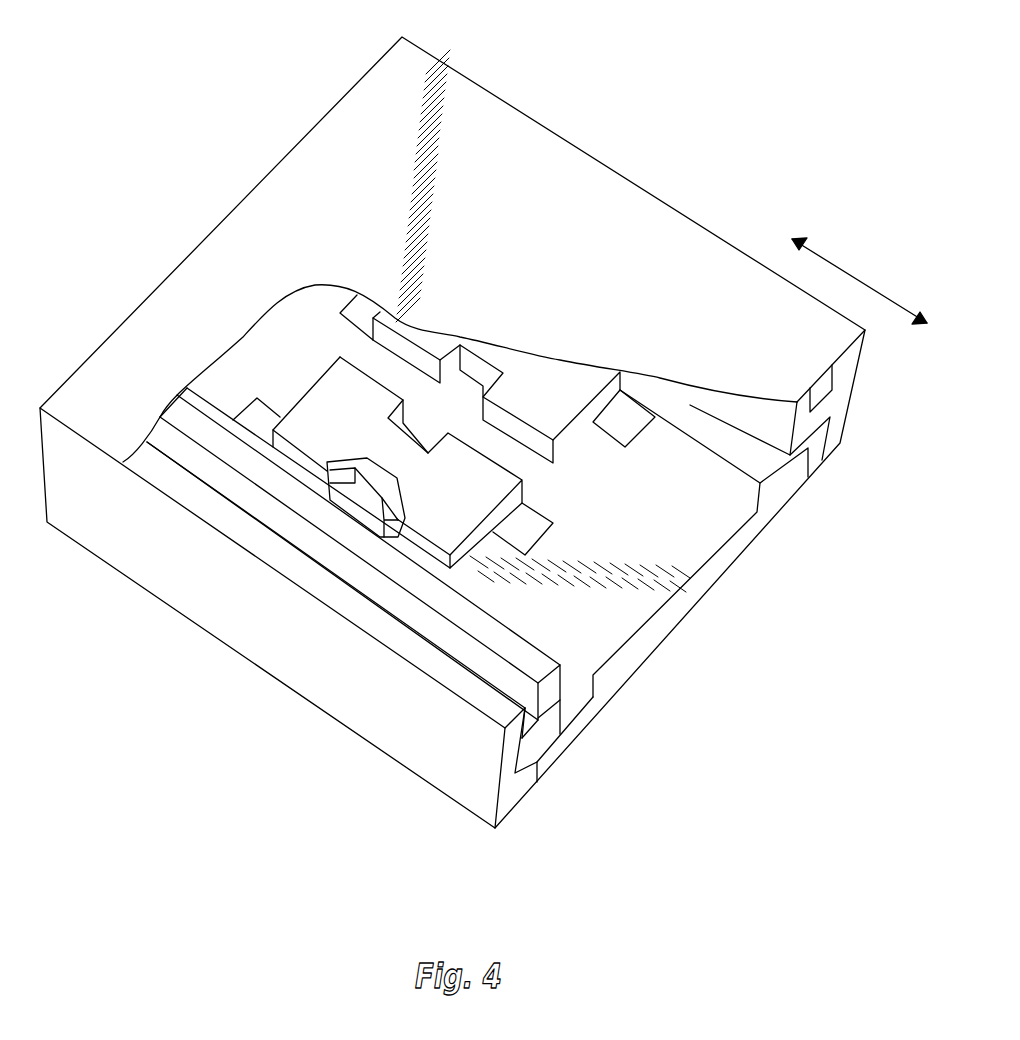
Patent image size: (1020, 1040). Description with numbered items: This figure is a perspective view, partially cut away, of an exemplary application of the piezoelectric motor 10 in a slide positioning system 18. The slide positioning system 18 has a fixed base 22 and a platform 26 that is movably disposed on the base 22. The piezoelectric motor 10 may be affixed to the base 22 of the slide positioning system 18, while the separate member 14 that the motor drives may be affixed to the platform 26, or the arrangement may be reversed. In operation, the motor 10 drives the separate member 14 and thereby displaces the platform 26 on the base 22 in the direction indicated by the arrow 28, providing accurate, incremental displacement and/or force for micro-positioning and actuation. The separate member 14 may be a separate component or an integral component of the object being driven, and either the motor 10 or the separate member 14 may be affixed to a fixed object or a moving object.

The piezoelectric motor 10 is at (353, 430).
The separate member 14 is at (548, 690).
The slide positioning system 18 is at (241, 138).
The fixed base 22 is at (660, 628).
The platform 26 is at (448, 762).
The arrow 28 is at (852, 265).